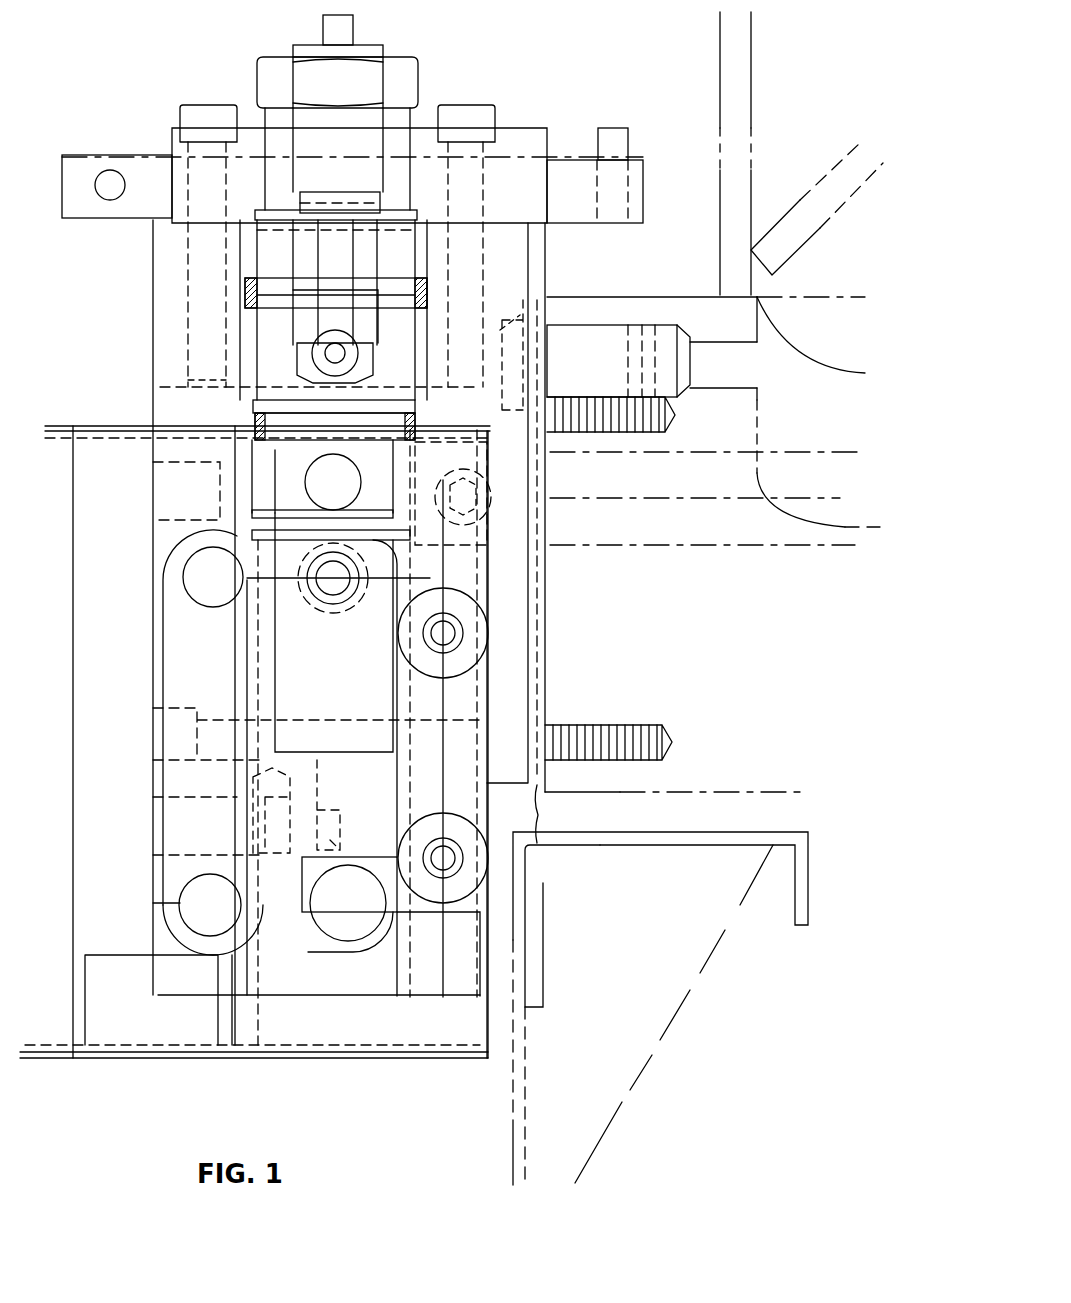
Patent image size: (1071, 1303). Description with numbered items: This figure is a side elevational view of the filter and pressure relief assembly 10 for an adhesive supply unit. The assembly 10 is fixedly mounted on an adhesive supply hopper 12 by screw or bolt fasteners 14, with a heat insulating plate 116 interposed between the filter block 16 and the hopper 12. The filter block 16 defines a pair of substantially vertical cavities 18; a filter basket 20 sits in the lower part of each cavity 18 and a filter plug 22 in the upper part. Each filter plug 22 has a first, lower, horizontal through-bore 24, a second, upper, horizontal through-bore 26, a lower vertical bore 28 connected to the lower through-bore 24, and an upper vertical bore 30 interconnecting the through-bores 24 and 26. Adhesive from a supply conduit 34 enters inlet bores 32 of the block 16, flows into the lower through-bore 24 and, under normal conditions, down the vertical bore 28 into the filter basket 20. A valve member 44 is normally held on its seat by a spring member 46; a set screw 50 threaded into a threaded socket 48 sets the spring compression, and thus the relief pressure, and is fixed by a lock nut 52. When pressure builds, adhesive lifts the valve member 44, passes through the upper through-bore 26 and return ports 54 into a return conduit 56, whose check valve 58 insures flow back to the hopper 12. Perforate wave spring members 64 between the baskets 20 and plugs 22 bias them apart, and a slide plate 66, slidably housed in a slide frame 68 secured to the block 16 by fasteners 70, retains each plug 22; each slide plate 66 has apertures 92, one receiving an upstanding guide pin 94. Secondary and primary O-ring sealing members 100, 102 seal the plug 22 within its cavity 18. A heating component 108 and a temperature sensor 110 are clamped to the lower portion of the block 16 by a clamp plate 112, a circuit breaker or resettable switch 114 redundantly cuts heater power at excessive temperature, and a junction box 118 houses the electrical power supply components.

The filter and pressure relief assembly 10 is at (660, 640).
The adhesive supply hopper 12 is at (777, 730).
The screw or bolt fasteners 14 is at (640, 730).
The filter block 16 is at (175, 650).
The cavities 18 is at (415, 713).
The filter basket 20 is at (287, 735).
The filter plug 22 is at (287, 470).
The first, lower, horizontal through-bore 24 is at (317, 482).
The second, upper, horizontal through-bore 26 is at (318, 360).
The first, lower, vertical passageway or bore 28 is at (363, 508).
The second, upper, vertical passageway or bore 30 is at (320, 408).
The inlet bores or passageways 32 is at (158, 480).
The supply conduit 34 is at (757, 545).
The valve member 44 is at (363, 363).
The spring member 46 is at (312, 254).
The threaded socket 48 is at (290, 142).
The set screw 50 is at (360, 148).
The lock nut 52 is at (405, 68).
The return ports 54 is at (430, 363).
The return hose or conduit 56 is at (436, 385).
The check valve 58 is at (602, 347).
The spring members 64 is at (240, 532).
The slide plate 66 is at (135, 162).
The slide frame 68 is at (425, 195).
The screw or bolt fasteners 70 is at (185, 110).
The apertures 92 is at (642, 185).
The guide pin 94 is at (632, 140).
The secondary O-ring sealing member 100 is at (305, 295).
The primary O-ring sealing member 102 is at (440, 428).
The heating component 108 is at (345, 930).
The temperature sensor 110 is at (205, 925).
The clamp plate 112 is at (320, 985).
The circuit breaker or resettable switch 114 is at (188, 577).
The heat insulating plate 116 is at (533, 843).
The junction box 118 is at (52, 1045).